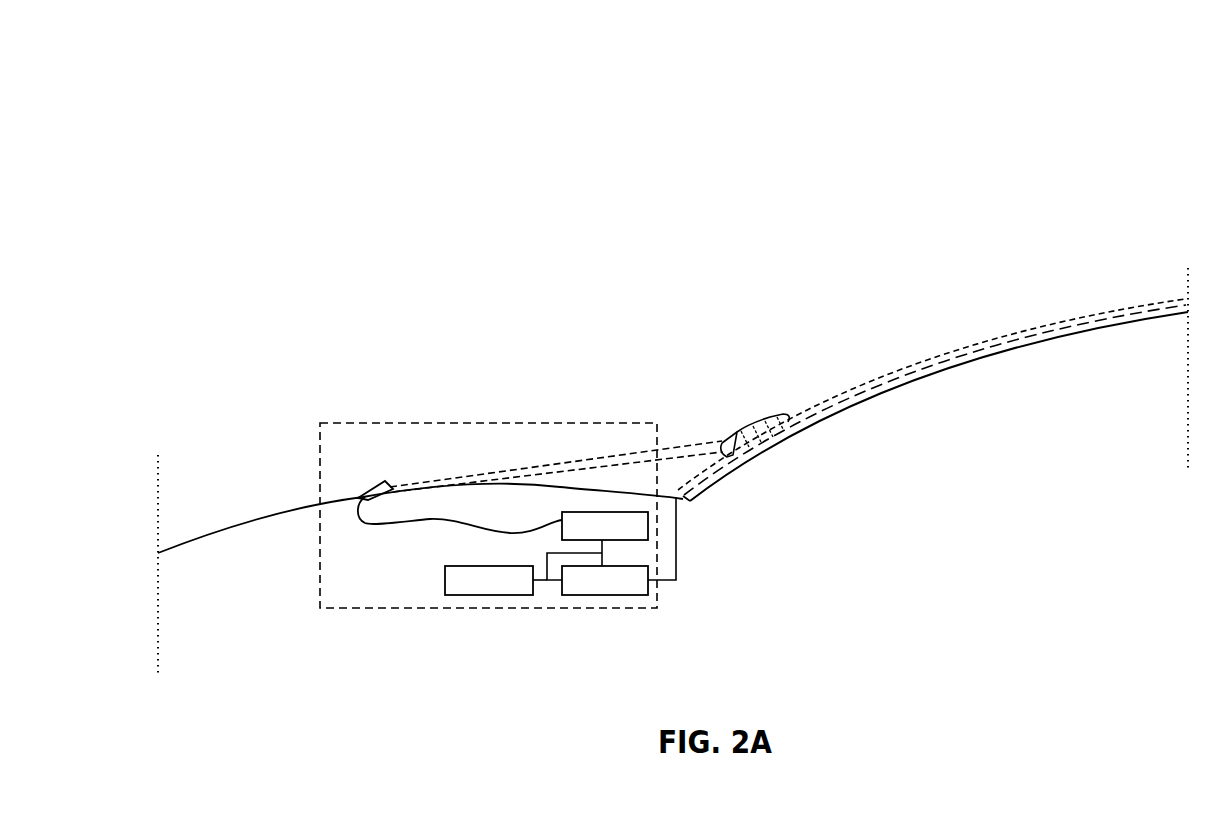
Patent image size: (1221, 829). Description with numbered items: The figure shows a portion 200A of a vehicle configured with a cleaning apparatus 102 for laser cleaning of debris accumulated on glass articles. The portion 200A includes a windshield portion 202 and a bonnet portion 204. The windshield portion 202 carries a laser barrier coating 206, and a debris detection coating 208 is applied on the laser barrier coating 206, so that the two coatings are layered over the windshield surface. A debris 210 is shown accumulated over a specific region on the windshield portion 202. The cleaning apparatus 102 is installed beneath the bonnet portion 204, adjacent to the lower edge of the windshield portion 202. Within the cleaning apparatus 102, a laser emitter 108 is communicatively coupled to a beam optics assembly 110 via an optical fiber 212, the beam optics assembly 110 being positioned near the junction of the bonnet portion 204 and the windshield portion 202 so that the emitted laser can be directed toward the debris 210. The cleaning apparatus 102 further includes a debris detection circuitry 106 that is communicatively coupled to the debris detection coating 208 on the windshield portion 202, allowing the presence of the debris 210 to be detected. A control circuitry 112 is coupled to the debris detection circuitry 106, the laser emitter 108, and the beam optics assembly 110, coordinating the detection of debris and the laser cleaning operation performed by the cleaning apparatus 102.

The portion of a vehicle 200A is at (1120, 140).
The cleaning apparatus 102 is at (518, 423).
The beam optics assembly 110 is at (384, 484).
The bonnet portion 204 is at (267, 517).
The optical fiber 212 is at (374, 526).
The control circuitry 112 is at (490, 595).
The debris detection circuitry 106 is at (617, 582).
The laser emitter 108 is at (617, 526).
The debris 210 is at (768, 415).
The debris detection coating 208 is at (933, 362).
The laser barrier coating 206 is at (992, 347).
The windshield portion 202 is at (1062, 332).